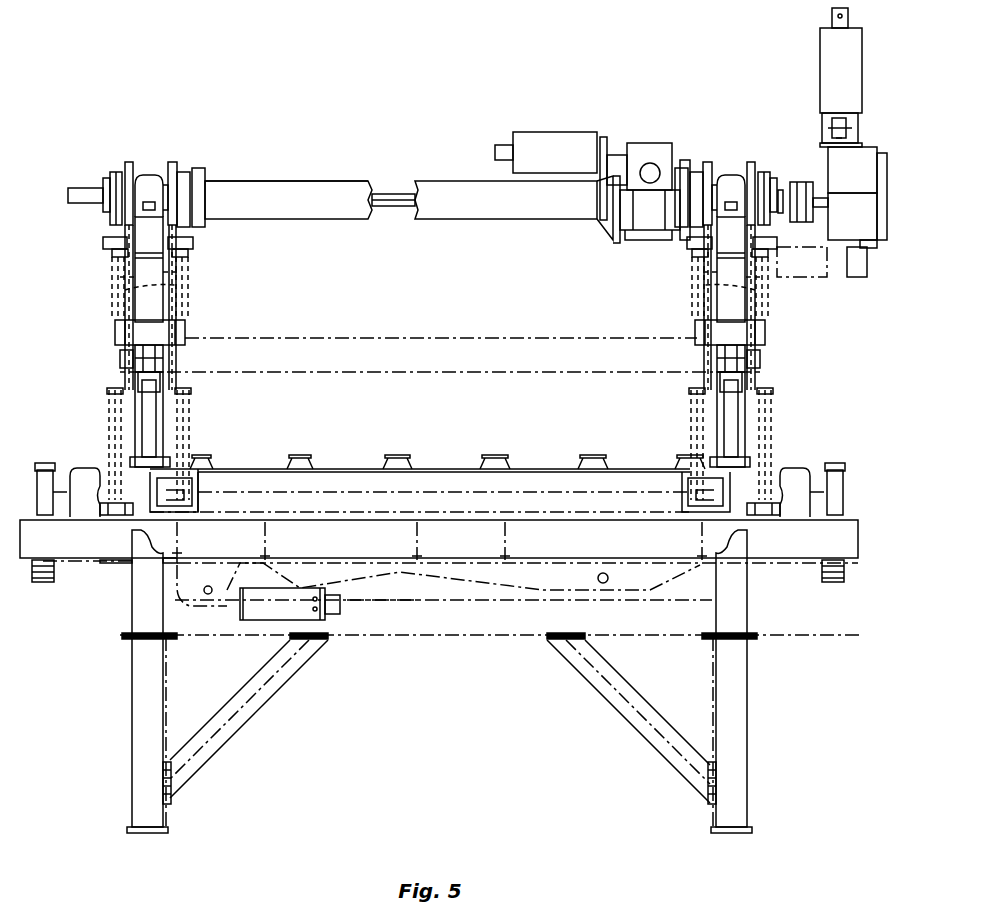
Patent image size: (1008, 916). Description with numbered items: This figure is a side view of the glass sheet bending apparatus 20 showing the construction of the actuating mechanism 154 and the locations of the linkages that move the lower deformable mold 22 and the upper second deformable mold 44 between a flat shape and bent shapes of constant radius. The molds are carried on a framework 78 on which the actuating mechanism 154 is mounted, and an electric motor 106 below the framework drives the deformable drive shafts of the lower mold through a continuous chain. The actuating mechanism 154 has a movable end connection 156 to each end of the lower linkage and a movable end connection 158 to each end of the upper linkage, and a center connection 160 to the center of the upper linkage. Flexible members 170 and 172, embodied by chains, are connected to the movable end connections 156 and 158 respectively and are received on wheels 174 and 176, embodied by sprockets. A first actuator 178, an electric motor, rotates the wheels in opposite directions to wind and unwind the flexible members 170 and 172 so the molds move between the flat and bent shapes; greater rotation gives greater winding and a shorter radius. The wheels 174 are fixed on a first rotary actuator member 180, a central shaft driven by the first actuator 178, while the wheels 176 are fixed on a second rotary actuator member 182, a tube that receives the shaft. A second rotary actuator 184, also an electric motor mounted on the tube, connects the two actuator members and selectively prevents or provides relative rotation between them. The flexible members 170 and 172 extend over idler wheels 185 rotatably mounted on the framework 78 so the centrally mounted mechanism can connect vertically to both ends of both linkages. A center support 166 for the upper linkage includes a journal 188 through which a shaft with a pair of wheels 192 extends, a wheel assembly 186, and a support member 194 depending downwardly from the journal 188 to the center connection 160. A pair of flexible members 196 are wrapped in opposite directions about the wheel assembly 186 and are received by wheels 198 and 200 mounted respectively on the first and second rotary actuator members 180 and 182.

The glass sheet bending apparatus 20 is at (353, 103).
The deformable mold 22 is at (95, 540).
The second deformable mold 44 is at (454, 490).
The framework 78 is at (130, 717).
The electric motor 106 is at (258, 628).
The actuating mechanism 154 is at (637, 112).
The movable end connection 156 is at (100, 505).
The movable end connection 158 is at (125, 500).
The center connection 160 is at (145, 448).
The center support 166 is at (165, 385).
The flexible member 170 is at (118, 276).
The flexible member 172 is at (195, 272).
The wheel 174 is at (116, 172).
The wheel 176 is at (186, 173).
The first actuator 178 is at (820, 58).
The first rotary actuator member 180 is at (72, 186).
The second rotary actuator member 182 is at (340, 185).
The second rotary actuator 184 is at (550, 131).
The idler wheel 185 is at (112, 248).
The wheel assembly 186 is at (200, 232).
The journal 188 is at (170, 312).
The wheel 192 is at (150, 317).
The support member 194 is at (150, 435).
The flexible member 196 is at (130, 290).
The wheel 198 is at (133, 170).
The wheel 200 is at (172, 163).